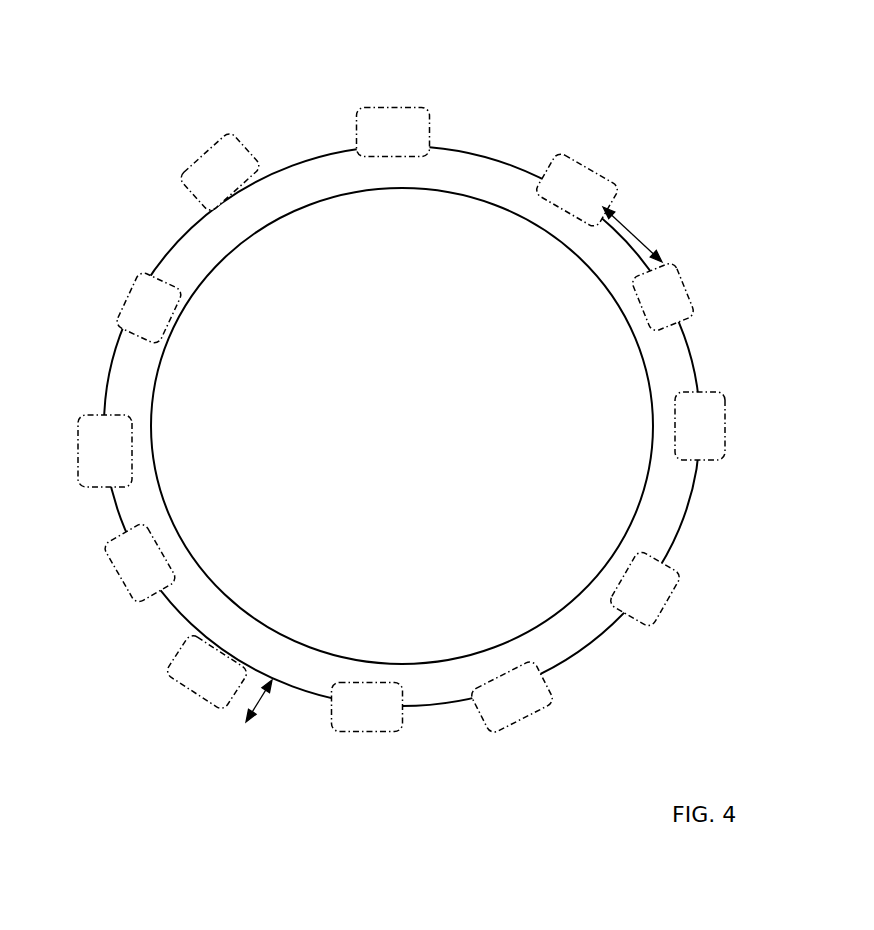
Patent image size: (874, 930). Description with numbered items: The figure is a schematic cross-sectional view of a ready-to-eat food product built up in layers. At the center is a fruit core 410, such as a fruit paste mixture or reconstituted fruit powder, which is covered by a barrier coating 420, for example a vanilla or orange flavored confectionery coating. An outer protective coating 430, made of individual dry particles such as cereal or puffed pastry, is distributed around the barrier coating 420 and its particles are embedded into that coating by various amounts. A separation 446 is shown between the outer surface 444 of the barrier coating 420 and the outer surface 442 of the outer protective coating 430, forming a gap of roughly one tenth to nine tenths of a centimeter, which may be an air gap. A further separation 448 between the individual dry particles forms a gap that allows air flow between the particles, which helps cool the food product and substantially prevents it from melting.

The fruit core 410 is at (412, 436).
The barrier coating 420 is at (676, 506).
The outer protective coating 430 is at (372, 92).
The outer surface of the outer protective coating 442 is at (250, 740).
The outer surface of the barrier coating 444 is at (318, 712).
The separation 446 is at (272, 714).
The separation 448 is at (644, 225).